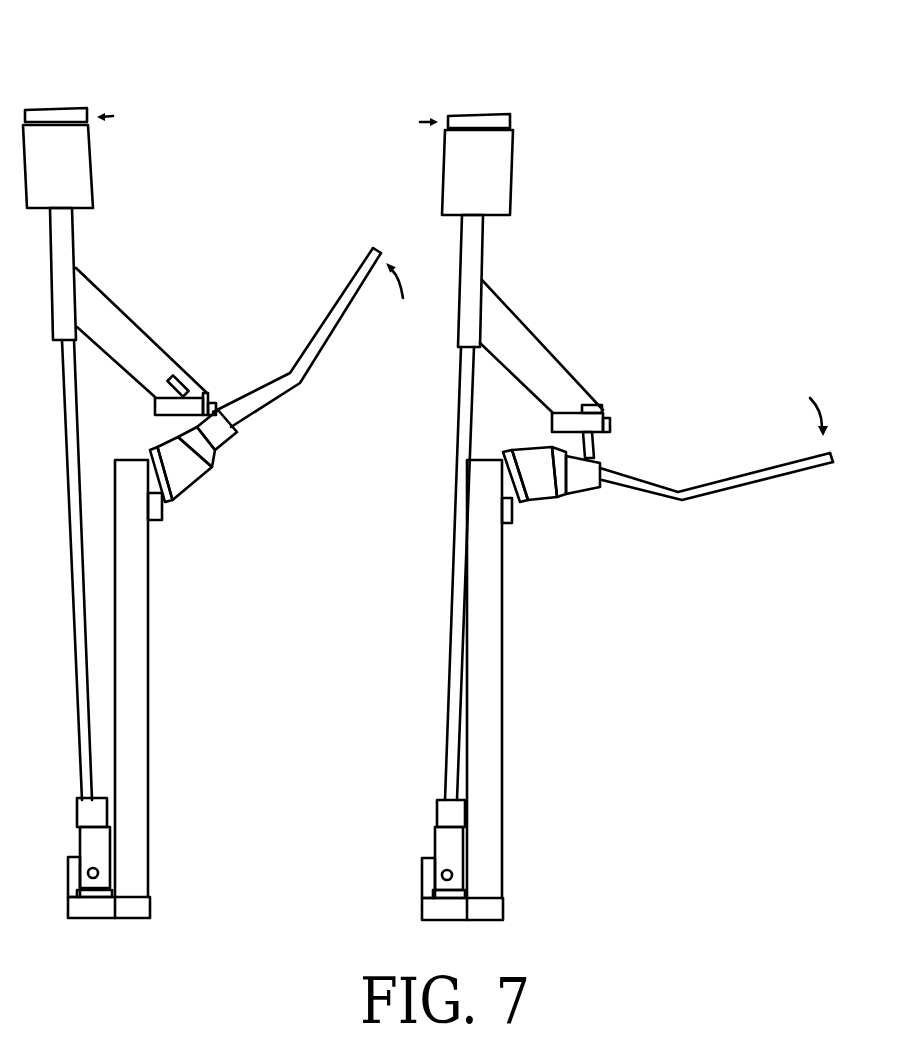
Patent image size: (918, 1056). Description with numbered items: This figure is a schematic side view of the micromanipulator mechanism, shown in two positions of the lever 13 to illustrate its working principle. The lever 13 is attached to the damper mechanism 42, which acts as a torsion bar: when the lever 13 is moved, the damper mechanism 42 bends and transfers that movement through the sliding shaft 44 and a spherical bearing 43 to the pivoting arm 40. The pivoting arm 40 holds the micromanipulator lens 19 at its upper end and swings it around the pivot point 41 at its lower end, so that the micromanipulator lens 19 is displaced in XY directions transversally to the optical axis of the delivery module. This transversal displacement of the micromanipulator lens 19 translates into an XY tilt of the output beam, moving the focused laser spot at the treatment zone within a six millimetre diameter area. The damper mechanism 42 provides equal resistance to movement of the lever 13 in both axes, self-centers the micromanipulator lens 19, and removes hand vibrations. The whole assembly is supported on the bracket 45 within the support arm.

The lever 13 is at (367, 288).
The micromanipulator lens 19 is at (87, 103).
The pivoting arm 40 is at (82, 530).
The pivot point 41 is at (94, 880).
The damper mechanism 42 is at (197, 492).
The spherical bearing 43 is at (210, 385).
The sliding shaft 44 is at (180, 377).
The bracket 45 is at (148, 677).